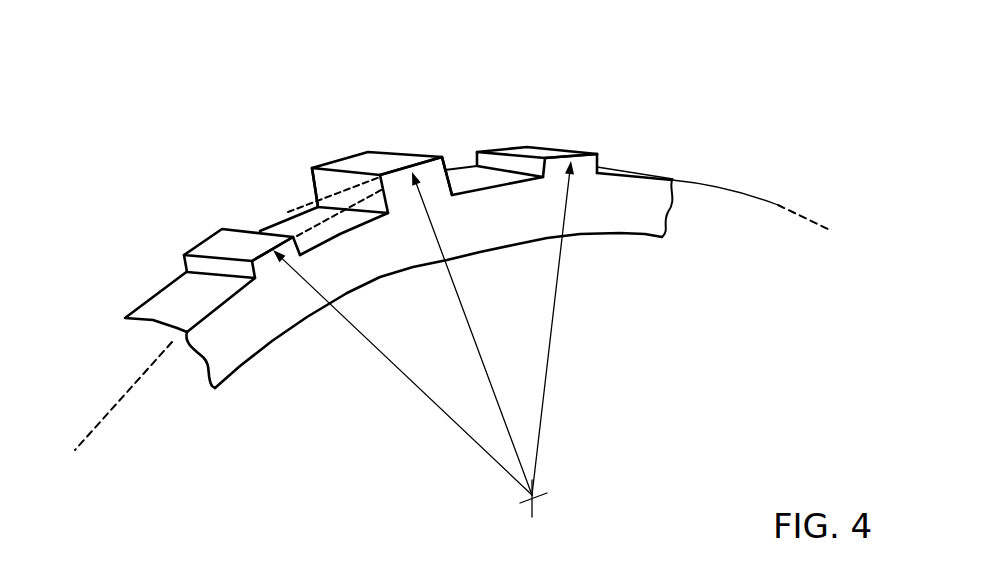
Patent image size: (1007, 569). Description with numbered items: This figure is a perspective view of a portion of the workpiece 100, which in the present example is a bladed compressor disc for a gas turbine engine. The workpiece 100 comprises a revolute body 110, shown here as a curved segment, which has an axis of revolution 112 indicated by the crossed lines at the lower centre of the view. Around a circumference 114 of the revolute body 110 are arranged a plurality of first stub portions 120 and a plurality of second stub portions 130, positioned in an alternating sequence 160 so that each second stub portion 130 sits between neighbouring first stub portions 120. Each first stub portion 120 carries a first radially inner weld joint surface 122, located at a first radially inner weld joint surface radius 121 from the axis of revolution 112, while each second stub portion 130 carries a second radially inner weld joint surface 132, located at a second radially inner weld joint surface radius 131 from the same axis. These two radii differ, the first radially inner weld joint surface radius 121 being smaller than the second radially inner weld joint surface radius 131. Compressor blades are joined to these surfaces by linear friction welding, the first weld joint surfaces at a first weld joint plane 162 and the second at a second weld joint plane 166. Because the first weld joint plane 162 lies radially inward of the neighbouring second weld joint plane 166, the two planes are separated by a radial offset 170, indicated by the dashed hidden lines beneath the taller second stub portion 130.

The workpiece 100 is at (682, 57).
The revolute body 110 is at (215, 347).
The axis of revolution 112 is at (535, 497).
The circumference 114 is at (763, 197).
The first stub portion 120 is at (375, 177).
The first radially inner weld joint surface radius 121 is at (420, 390).
The first radially inner weld joint surface 122 is at (542, 155).
The second stub portion 130 is at (298, 194).
The second radially inner weld joint surface radius 131 is at (473, 327).
The second radially inner weld joint surface 132 is at (385, 162).
The alternating sequence 160 is at (345, 191).
The first weld joint plane 162 is at (560, 151).
The second weld joint plane 166 is at (408, 162).
The radial offset 170 is at (322, 237).